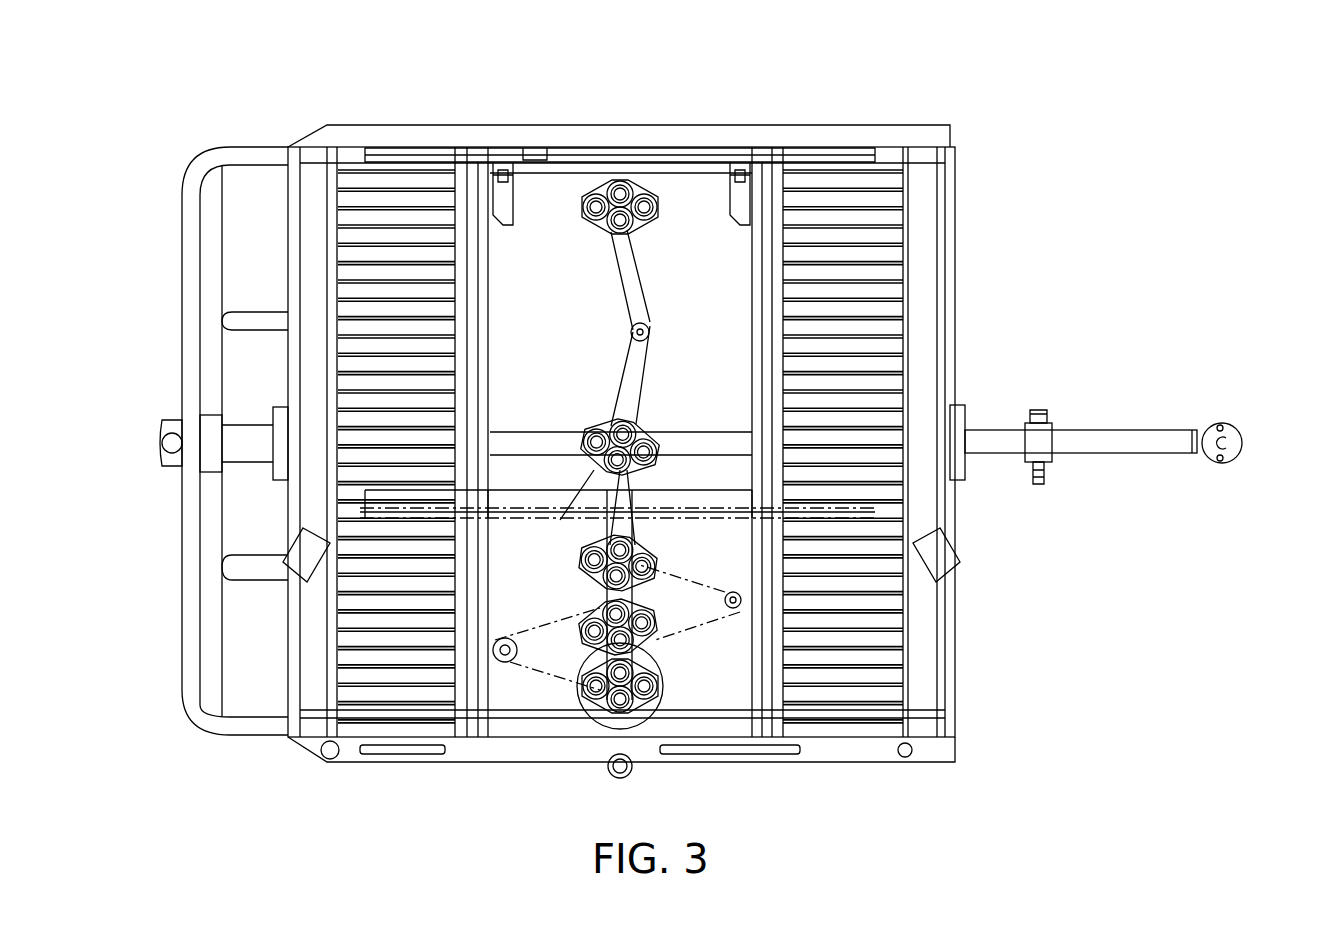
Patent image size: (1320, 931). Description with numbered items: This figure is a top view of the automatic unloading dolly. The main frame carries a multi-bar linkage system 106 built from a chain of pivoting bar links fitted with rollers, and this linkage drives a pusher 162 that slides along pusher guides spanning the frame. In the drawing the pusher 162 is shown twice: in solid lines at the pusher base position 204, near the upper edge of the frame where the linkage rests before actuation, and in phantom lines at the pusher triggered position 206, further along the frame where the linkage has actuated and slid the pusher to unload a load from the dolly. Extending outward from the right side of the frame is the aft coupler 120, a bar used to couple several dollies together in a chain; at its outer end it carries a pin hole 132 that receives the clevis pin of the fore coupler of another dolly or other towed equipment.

The pusher base position 204 is at (545, 105).
The pusher 162 is at (815, 160).
The multi-bar linkage system 106 is at (590, 350).
The pusher triggered position 206 is at (690, 555).
The aft coupler 120 is at (1088, 440).
The pin hole 132 is at (1228, 441).